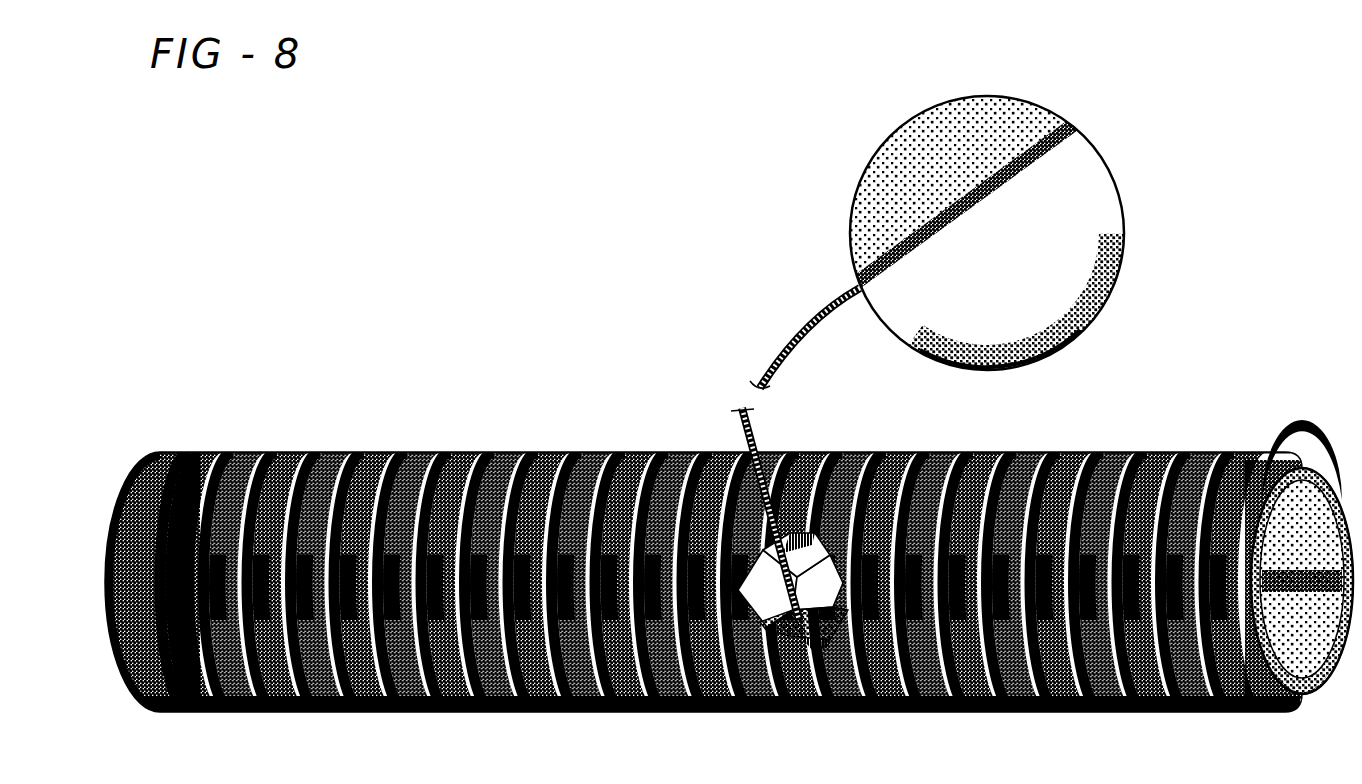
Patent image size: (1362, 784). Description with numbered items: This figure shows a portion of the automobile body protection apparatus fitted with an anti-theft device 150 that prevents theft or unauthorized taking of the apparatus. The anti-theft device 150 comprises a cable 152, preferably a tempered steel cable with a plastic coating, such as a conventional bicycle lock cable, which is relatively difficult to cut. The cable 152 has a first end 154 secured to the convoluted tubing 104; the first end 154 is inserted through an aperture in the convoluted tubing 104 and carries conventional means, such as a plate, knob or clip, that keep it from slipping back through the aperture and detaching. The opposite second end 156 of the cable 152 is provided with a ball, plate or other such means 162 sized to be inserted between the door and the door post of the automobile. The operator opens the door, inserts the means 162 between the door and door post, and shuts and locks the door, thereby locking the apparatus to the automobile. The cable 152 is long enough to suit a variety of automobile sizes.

The convoluted tubing 104 is at (1222, 448).
The anti-theft device 150 is at (726, 500).
The cable 152 is at (763, 364).
The first end 154 is at (800, 574).
The second end 156 is at (954, 205).
The ball, plate or other such means 162 is at (1124, 280).